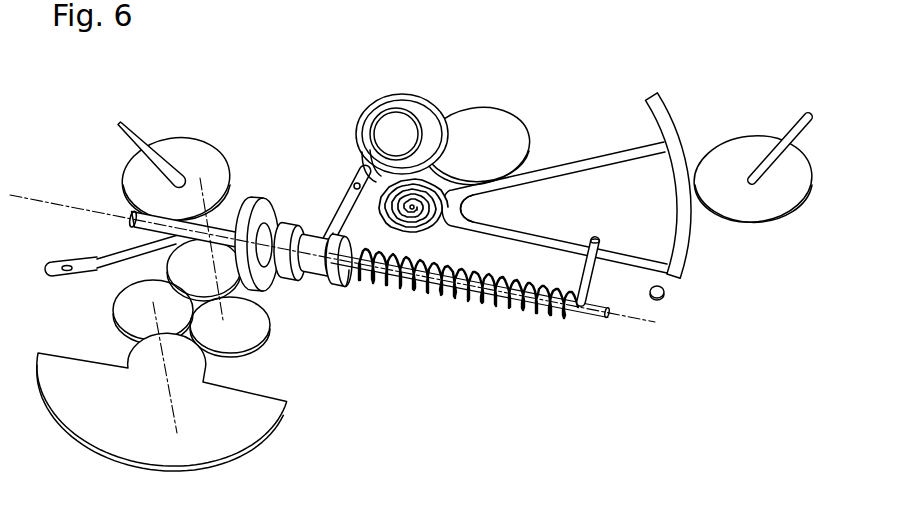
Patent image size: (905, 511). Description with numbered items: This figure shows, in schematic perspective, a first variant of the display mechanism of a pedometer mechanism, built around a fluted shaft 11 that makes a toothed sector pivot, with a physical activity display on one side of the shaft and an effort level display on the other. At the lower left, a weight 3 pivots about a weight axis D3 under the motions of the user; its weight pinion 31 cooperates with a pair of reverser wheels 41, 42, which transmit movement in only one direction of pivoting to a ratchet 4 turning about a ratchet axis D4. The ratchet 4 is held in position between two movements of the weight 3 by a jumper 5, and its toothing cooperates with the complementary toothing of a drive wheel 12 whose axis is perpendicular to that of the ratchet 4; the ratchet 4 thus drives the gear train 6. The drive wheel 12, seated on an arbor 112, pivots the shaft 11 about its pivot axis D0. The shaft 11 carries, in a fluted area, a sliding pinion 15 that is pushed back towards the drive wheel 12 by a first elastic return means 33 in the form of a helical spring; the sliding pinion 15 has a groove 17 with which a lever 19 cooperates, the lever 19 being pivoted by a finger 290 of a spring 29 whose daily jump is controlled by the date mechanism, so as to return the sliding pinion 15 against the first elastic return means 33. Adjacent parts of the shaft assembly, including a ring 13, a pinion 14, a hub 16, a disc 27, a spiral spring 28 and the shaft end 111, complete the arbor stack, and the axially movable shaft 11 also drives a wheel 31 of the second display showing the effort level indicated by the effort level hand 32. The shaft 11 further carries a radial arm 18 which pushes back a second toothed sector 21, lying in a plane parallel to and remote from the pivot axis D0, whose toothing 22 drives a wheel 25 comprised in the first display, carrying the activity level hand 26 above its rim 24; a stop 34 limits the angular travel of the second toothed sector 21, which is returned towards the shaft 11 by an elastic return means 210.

The weight 3 is at (213, 443).
The ratchet 4 is at (138, 253).
The jumper 5 is at (65, 264).
The gear train 6 is at (322, 228).
The shaft 11 is at (593, 320).
The drive wheel 12 is at (259, 195).
The ring 13 is at (283, 221).
The pinion 14 is at (352, 278).
The sliding pinion 15 is at (333, 285).
The hub 16 is at (275, 276).
The groove 17 is at (313, 281).
The radial arm 18 is at (598, 240).
The lever 19 is at (347, 198).
The second toothed sector 21 is at (678, 255).
The toothing 22 is at (700, 232).
The disc rim 24 is at (792, 225).
The wheel 25 is at (737, 160).
The activity level hand 26 is at (793, 130).
The disc 27 is at (492, 137).
The spiral spring 28 is at (443, 107).
The spring 29 is at (397, 95).
The weight pinion 31 is at (200, 152).
The effort level hand 32 is at (143, 143).
The first elastic return means 33 is at (523, 313).
The stop 34 is at (672, 295).
The reverser wheel 41 is at (265, 351).
The reverser wheel 42 is at (108, 322).
The shaft end 111 is at (620, 311).
The arbor 112 is at (129, 216).
The elastic return means 210 is at (458, 208).
The finger 290 is at (392, 145).
The pivot axis D0 is at (44, 197).
The weight axis D3 is at (173, 415).
The ratchet axis D4 is at (212, 307).